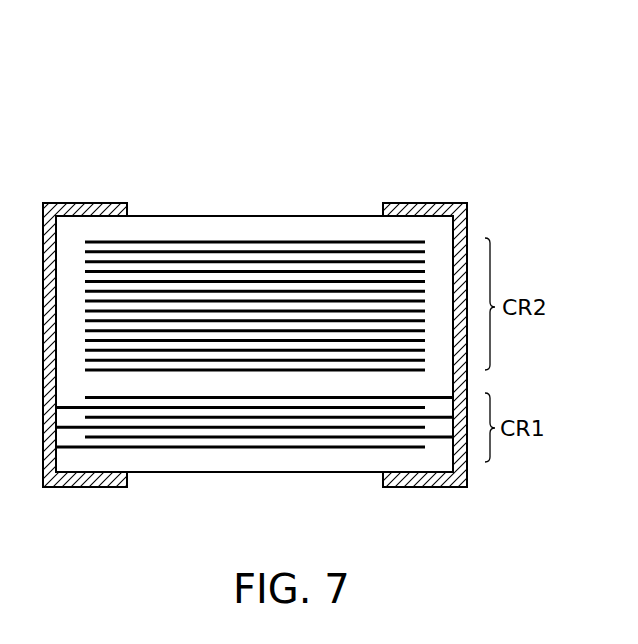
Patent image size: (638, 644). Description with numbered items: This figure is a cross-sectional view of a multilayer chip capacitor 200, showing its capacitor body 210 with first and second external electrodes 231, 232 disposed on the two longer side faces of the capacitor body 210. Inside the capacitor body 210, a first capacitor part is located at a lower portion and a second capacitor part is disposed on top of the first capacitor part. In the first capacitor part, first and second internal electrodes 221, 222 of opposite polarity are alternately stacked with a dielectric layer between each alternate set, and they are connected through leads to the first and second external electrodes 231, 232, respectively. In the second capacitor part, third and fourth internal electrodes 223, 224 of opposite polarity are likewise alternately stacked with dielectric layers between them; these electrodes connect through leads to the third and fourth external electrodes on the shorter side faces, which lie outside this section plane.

The multilayer chip capacitor 200 is at (282, 292).
The capacitor body 210 is at (257, 216).
The first internal electrode 221 is at (152, 447).
The second internal electrode 222 is at (200, 437).
The third internal electrode 223 is at (292, 370).
The fourth internal electrode 224 is at (345, 360).
The first external electrode 231 is at (90, 203).
The second external electrode 232 is at (450, 203).